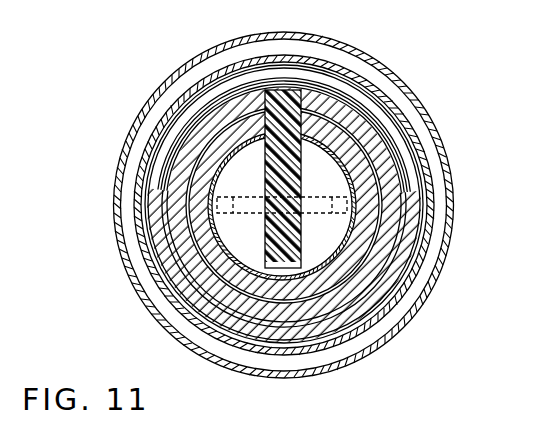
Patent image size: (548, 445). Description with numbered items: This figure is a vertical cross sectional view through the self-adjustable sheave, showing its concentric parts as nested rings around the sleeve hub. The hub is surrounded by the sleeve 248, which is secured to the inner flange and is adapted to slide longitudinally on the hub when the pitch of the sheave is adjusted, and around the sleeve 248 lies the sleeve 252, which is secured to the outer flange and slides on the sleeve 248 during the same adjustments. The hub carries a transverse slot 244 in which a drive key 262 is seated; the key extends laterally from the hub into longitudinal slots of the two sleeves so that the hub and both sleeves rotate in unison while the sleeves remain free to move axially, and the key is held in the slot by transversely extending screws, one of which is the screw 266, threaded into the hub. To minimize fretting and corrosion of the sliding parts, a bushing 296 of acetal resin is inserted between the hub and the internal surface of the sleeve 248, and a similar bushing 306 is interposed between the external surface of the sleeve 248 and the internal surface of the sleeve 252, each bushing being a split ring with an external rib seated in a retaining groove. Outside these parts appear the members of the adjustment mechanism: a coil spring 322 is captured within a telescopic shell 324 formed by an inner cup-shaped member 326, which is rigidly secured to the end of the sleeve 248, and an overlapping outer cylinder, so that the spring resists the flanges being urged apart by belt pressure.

The transverse slot 244 is at (271, 90).
The drive key 262 is at (297, 89).
The coil spring 322 is at (172, 132).
The telescopic shell 324 is at (432, 127).
The inner cup-shaped member 326 is at (428, 242).
The sleeve 252 is at (343, 300).
The sleeve 248 is at (221, 258).
The bushing 306 is at (216, 140).
The bushing 296 is at (345, 167).
The screw 266 is at (337, 216).